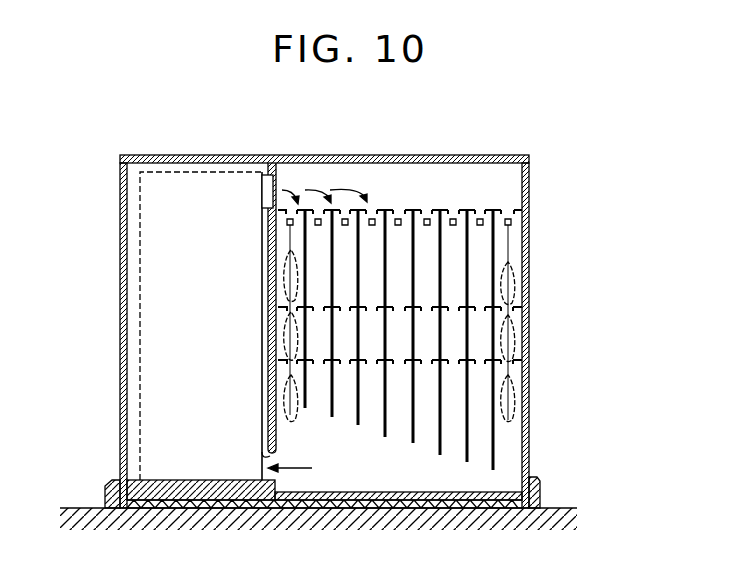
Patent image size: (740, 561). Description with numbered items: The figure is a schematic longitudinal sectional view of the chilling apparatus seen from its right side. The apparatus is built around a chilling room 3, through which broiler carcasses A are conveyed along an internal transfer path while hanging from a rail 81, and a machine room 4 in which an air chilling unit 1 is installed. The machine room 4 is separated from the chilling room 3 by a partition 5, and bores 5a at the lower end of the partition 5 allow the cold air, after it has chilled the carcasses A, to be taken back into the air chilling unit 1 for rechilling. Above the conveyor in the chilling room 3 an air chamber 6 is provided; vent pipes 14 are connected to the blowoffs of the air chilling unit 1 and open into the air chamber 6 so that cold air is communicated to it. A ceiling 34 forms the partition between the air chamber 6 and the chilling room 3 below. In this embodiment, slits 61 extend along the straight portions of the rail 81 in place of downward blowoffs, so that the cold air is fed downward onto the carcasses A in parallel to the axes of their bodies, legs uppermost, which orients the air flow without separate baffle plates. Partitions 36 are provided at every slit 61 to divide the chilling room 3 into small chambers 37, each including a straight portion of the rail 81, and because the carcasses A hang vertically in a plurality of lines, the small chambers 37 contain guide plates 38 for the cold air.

The air chilling unit 1 is at (187, 170).
The chilling room 3 is at (401, 152).
The machine room 4 is at (125, 300).
The partition 5 is at (265, 209).
The bores 5a is at (263, 457).
The air chamber 6 is at (437, 178).
The vent pipes 14 is at (268, 192).
The ceiling 34 is at (439, 210).
The partitions 36 is at (494, 243).
The small chambers 37 is at (479, 291).
The guide plates 38 is at (522, 350).
The slits 61 is at (482, 210).
The rail 81 is at (372, 219).
The broiler carcasses A is at (513, 400).